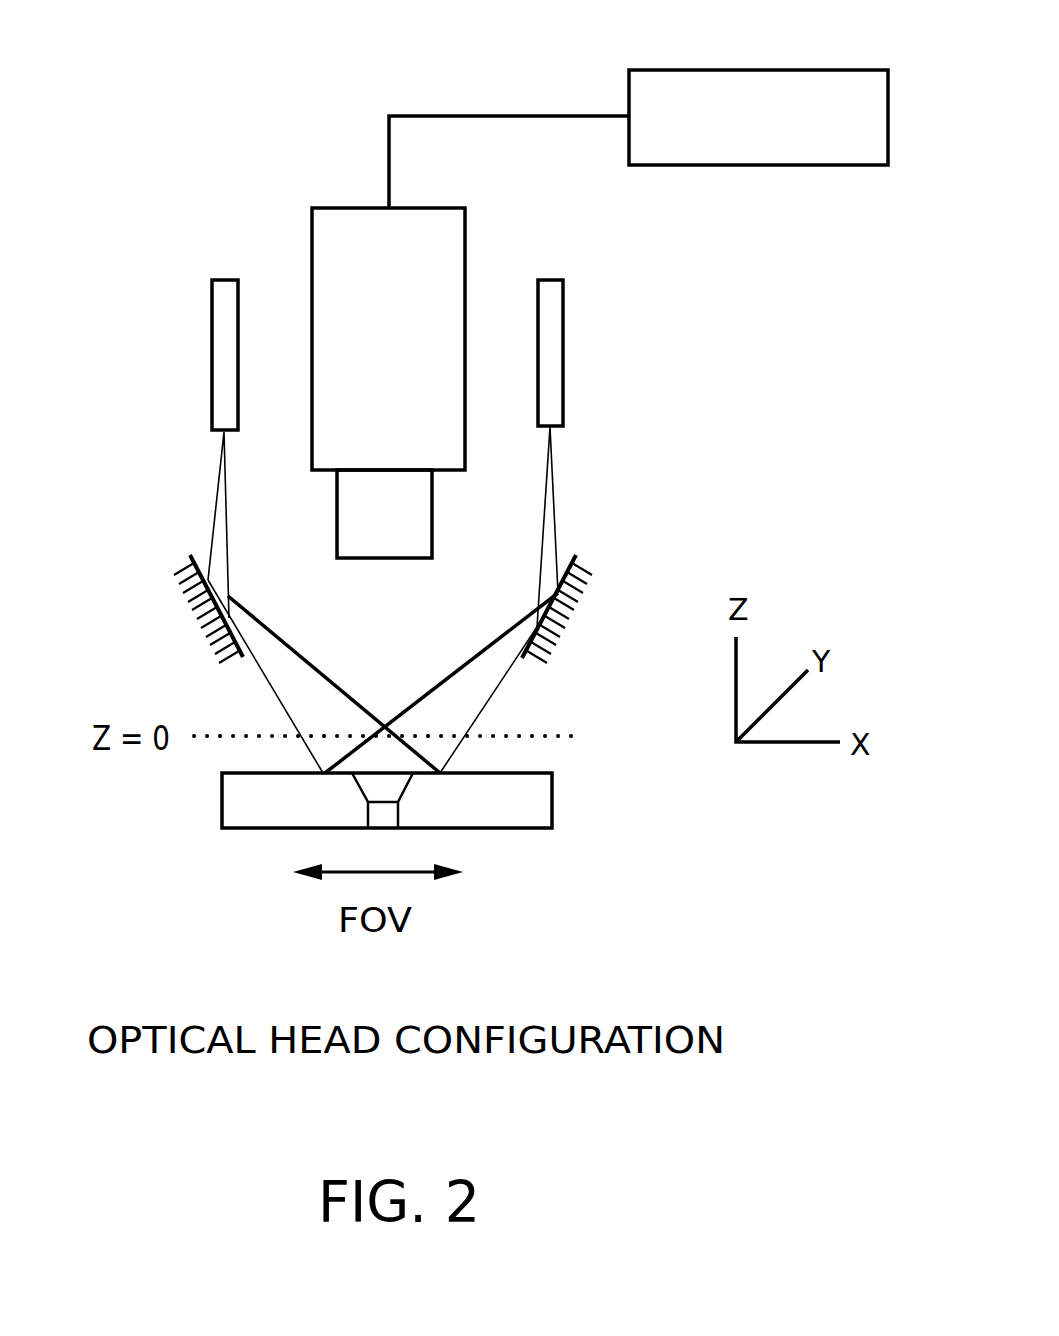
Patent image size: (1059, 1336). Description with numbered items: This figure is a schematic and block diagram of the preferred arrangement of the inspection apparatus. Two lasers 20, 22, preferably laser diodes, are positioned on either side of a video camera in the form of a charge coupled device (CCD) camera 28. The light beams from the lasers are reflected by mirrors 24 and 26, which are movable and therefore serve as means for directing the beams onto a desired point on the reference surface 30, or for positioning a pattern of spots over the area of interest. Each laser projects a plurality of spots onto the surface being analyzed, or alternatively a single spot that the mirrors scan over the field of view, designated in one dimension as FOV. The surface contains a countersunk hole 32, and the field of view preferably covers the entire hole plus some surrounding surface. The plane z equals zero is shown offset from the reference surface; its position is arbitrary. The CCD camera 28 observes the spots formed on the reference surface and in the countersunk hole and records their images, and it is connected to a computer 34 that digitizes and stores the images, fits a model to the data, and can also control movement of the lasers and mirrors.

The laser 20 is at (223, 358).
The laser 22 is at (550, 395).
The mirror 24 is at (190, 555).
The mirror 26 is at (576, 553).
The charge coupled device (CCD) camera 28 is at (338, 218).
The reference surface 30 is at (555, 802).
The countersunk hole 32 is at (380, 787).
The computer 34 is at (848, 80).